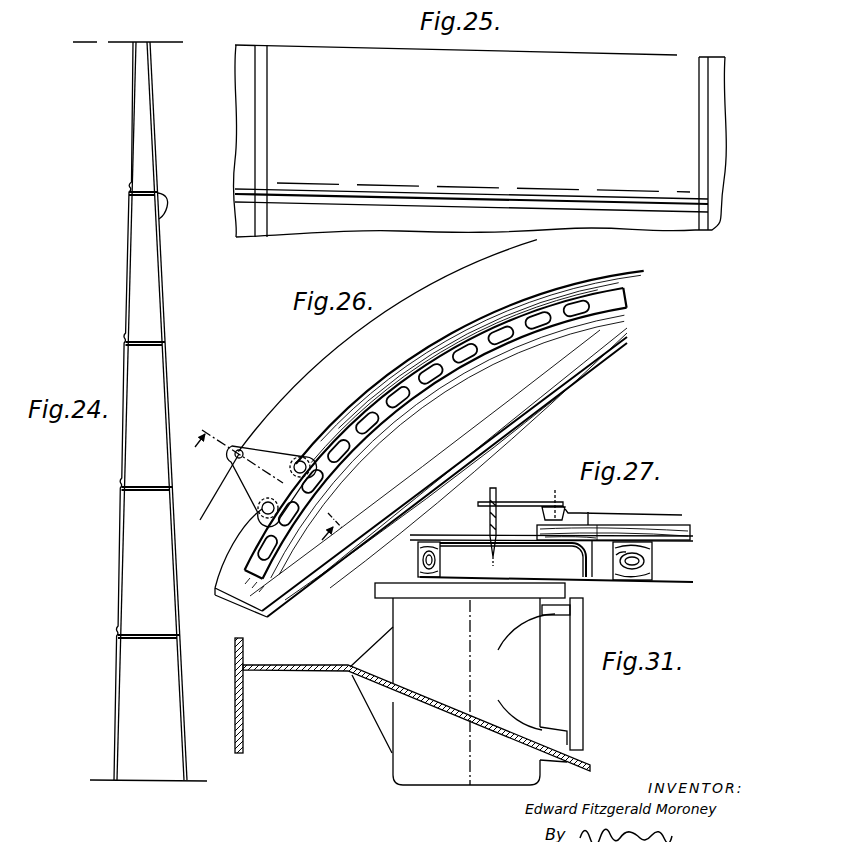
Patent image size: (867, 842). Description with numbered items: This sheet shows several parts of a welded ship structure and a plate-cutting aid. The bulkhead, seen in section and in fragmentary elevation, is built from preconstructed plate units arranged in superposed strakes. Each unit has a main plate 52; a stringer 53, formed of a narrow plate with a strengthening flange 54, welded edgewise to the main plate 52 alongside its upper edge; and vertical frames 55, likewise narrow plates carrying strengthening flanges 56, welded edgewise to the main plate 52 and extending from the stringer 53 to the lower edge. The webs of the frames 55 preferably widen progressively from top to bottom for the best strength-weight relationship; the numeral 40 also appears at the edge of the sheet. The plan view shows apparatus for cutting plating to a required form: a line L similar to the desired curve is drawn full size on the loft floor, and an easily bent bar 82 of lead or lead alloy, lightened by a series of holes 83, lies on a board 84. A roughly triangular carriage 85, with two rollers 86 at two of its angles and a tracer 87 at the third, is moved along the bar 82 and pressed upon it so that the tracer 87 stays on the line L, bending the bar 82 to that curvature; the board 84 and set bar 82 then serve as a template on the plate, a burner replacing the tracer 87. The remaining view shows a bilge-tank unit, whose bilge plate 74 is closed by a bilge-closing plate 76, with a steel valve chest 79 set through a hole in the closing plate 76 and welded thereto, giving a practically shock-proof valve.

In FIG. 24, the main plate 52 is at (128, 287).
In FIG. 25, the main plate 52 is at (479, 141).
In FIG. 24, the stringer 53 is at (138, 193).
In FIG. 24, the strengthening flange 54 is at (160, 217).
In FIG. 25, the strengthening flange 54 is at (457, 206).
In FIG. 24, the vertical frame 55 is at (143, 297).
In FIG. 24, the strengthening flange 56 is at (163, 313).
In FIG. 25, the strengthening flange 56 is at (262, 115).
In FIG. 25, the frame member 40 is at (658, 3).
In FIG. 26, the line L is at (302, 379).
In FIG. 26, the bar 82 is at (373, 407).
In FIG. 26, the holes 83 is at (397, 390).
In FIG. 26, the board 84 is at (463, 327).
In FIG. 26, the carriage 85 is at (256, 445).
In FIG. 26, the rollers 86 is at (262, 506).
In FIG. 26, the tracer 87 is at (233, 457).
In FIG. 31, the bilge plate 74 is at (243, 733).
In FIG. 31, the bilge-closing plate 76 is at (273, 665).
In FIG. 31, the valve chest 79 is at (397, 763).